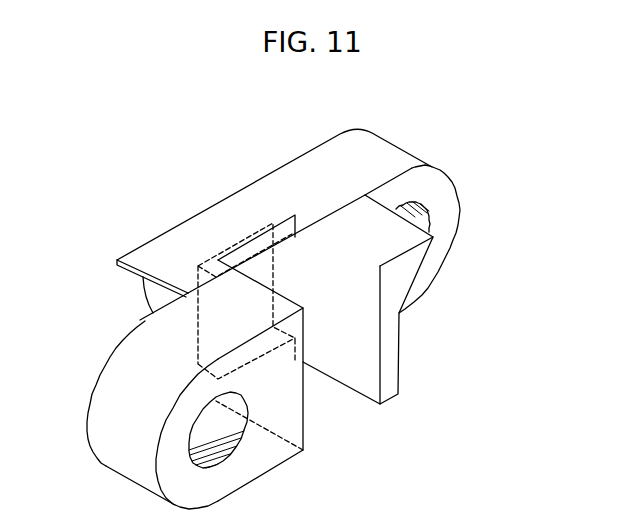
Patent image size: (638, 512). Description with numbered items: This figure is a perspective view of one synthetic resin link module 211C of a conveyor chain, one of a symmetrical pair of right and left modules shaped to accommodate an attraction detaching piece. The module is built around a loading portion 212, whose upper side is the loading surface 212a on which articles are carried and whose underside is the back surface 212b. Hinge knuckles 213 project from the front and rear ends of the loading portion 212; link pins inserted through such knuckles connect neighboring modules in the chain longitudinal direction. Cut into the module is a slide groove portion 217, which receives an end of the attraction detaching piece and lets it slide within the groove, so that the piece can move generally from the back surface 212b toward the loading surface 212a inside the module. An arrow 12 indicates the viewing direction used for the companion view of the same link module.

The synthetic resin link module 211C is at (98, 128).
The arrow 12 is at (526, 174).
The loading portion 212 is at (202, 218).
The loading surface 212a is at (249, 203).
The back surface 212b is at (399, 400).
The hinge knuckle 213 is at (430, 266).
The slide groove portion 217 is at (258, 266).